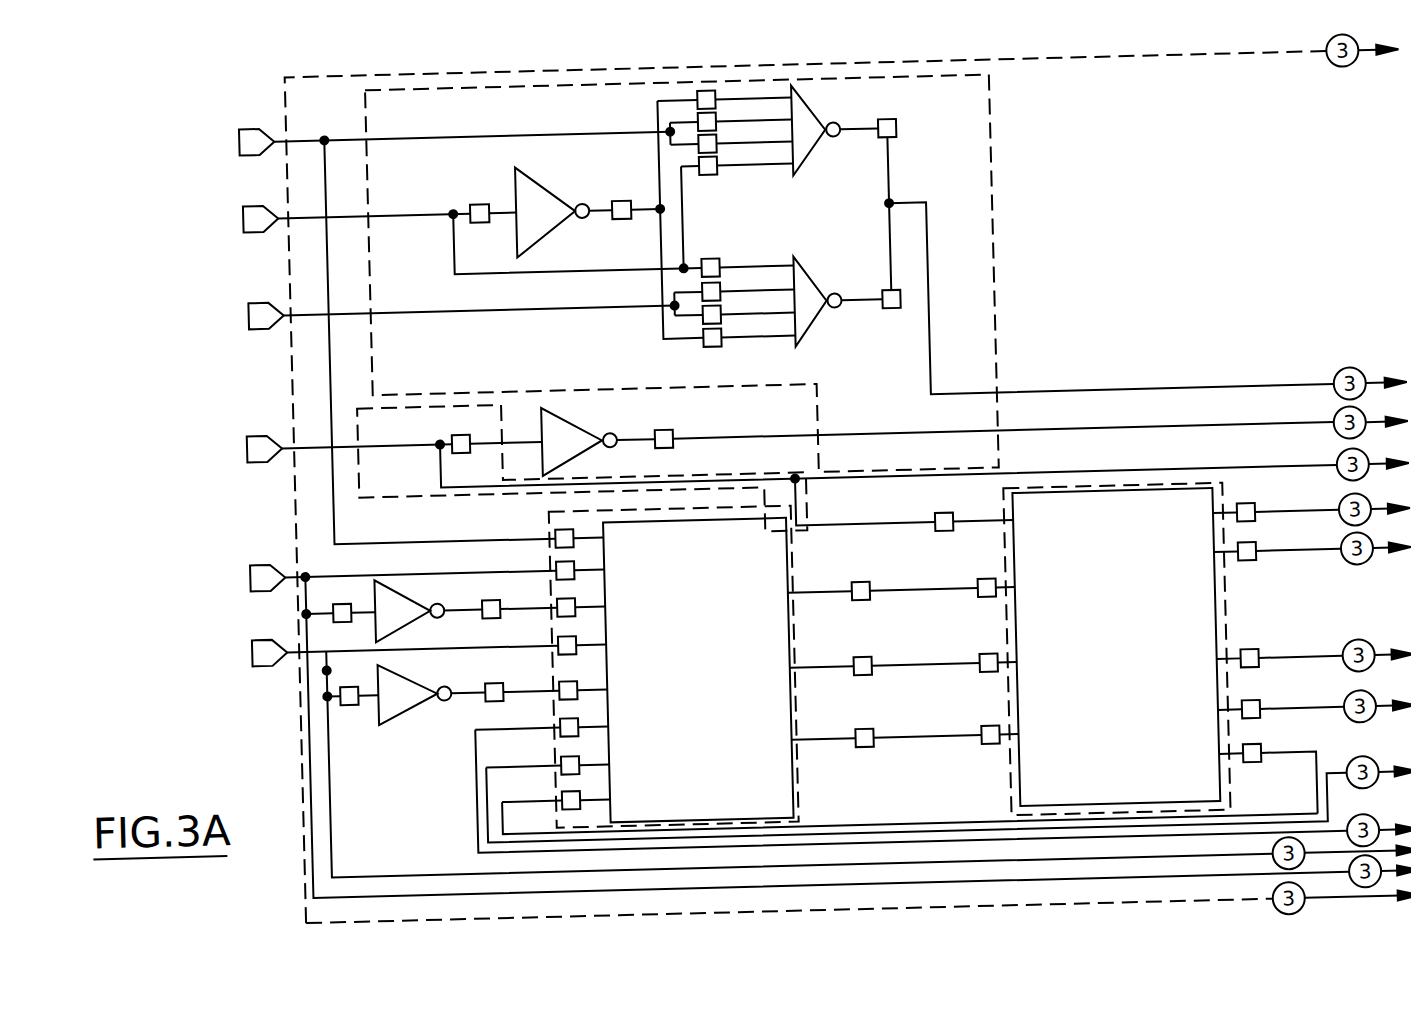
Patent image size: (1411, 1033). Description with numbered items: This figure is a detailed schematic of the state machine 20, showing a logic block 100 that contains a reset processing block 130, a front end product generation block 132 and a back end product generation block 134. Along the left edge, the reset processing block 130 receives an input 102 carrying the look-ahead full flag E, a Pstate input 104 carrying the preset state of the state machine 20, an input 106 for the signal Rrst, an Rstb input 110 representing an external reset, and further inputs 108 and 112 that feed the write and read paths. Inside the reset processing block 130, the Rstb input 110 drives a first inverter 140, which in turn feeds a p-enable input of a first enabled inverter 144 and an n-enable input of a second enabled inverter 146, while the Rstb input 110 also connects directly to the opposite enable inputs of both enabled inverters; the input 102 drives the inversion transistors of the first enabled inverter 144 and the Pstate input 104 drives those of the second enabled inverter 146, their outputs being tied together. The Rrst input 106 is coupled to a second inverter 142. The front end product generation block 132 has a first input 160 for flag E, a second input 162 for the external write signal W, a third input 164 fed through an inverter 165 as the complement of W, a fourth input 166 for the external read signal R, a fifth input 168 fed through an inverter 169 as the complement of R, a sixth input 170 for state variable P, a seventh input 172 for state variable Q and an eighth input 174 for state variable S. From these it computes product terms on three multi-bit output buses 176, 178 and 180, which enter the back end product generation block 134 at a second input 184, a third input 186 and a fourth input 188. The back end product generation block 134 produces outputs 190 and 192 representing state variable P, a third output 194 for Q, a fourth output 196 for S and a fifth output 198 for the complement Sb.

The state machine 20 is at (180, 68).
The logic block 100 is at (294, 90).
The input 102 is at (247, 116).
The Pstate input 104 is at (257, 289).
The input 106 is at (258, 629).
The R reset input 108 is at (259, 420).
The Rstb input 110 is at (253, 191).
The W input 112 is at (260, 554).
The reset processing block 130 is at (1001, 122).
The front end product generation block 132 is at (790, 802).
The back end product generation block 134 is at (1000, 786).
The first inverter 140 is at (533, 174).
The second inverter 142 is at (586, 425).
The first enabled inverter 144 is at (819, 111).
The second enabled inverter 146 is at (811, 275).
The first input 160 is at (630, 550).
The second input 162 is at (633, 583).
The third input 164 is at (640, 614).
The inverter 165 is at (423, 578).
The fourth input 166 is at (632, 656).
The fifth input 168 is at (640, 691).
The inverter 169 is at (431, 673).
The sixth input 170 is at (630, 734).
The seventh input 172 is at (630, 771).
The eighth input 174 is at (630, 806).
The output bus 176 is at (827, 593).
The output bus 178 is at (823, 668).
The output bus 180 is at (821, 743).
The second input 184 is at (1014, 593).
The third input 186 is at (1013, 668).
The fourth input 188 is at (1012, 740).
The output 190 is at (1226, 523).
The output 192 is at (1226, 568).
The third output 194 is at (1228, 670).
The fourth output 196 is at (1232, 721).
The fifth output 198 is at (1230, 769).